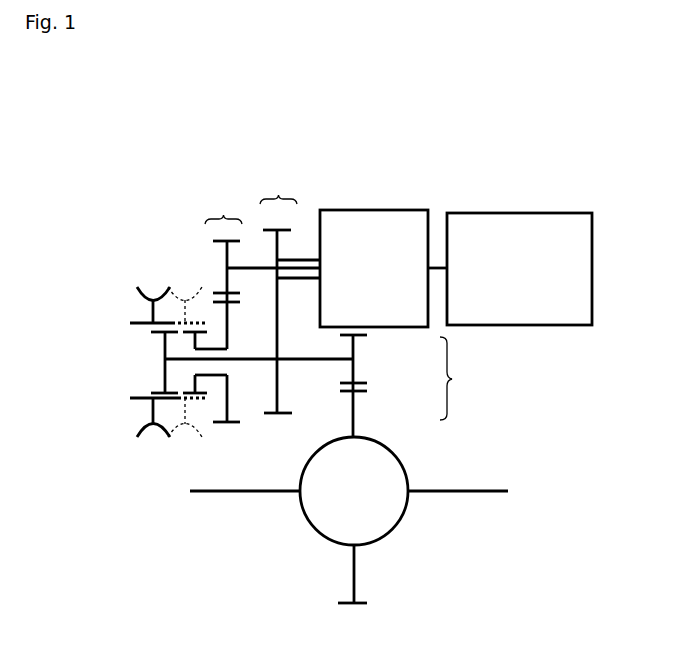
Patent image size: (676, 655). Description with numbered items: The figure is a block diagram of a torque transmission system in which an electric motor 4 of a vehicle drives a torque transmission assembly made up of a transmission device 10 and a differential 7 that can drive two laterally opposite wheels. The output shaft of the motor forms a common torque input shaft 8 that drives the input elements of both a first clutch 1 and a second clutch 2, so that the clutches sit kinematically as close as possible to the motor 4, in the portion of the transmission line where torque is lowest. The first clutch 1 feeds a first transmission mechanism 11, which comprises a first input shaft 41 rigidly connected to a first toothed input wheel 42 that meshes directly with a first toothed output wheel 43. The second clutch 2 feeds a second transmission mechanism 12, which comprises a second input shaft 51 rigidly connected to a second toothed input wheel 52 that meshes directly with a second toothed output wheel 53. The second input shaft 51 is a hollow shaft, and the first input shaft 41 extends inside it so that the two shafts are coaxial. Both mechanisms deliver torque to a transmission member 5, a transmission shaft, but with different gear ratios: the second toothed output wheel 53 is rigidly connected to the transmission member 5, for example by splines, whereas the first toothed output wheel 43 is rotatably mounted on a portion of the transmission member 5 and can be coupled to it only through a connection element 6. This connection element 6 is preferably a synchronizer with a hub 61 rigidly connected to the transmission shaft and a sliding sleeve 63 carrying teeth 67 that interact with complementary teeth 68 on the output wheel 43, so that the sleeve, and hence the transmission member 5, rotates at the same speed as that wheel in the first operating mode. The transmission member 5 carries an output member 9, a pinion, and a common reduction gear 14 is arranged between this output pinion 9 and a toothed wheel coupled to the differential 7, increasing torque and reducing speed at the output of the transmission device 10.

The first clutch 1 is at (374, 235).
The second clutch 2 is at (392, 252).
The electric motor 4 is at (519, 269).
The transmission member 5 is at (317, 358).
The connection element 6 is at (150, 400).
The differential 7 is at (367, 505).
The common torque input shaft 8 is at (436, 262).
The output member 9 is at (353, 372).
The transmission device 10 is at (97, 243).
The first transmission mechanism 11 is at (223, 208).
The second transmission mechanism 12 is at (278, 188).
The common reduction gear 14 is at (460, 378).
The first input shaft 41 is at (258, 265).
The first toothed input wheel 42 is at (222, 258).
The first toothed output wheel 43 is at (229, 395).
The second input shaft 51 is at (305, 258).
The second toothed input wheel 52 is at (279, 250).
The second toothed output wheel 53 is at (280, 378).
The hub 61 is at (163, 345).
The sliding sleeve 63 is at (145, 297).
The teeth 67 is at (175, 322).
The complementary teeth 68 is at (197, 390).